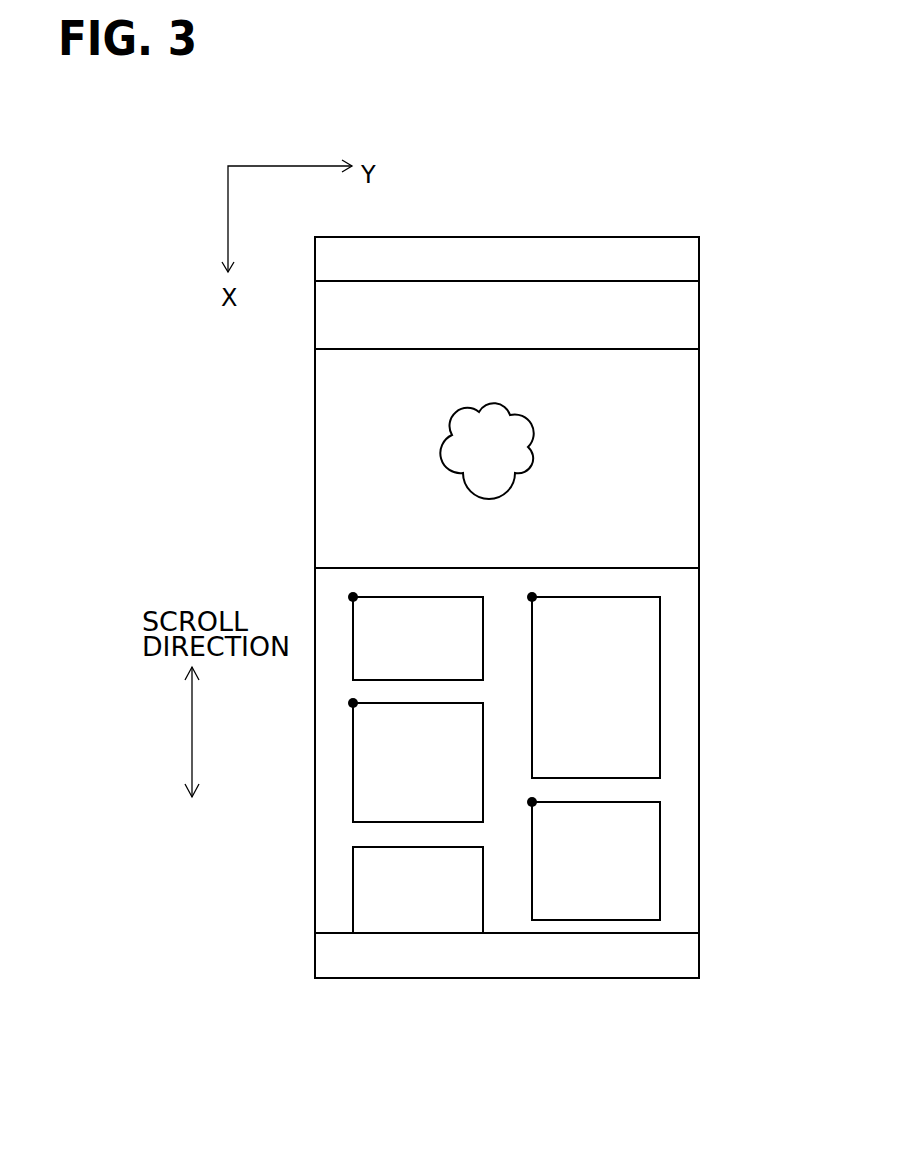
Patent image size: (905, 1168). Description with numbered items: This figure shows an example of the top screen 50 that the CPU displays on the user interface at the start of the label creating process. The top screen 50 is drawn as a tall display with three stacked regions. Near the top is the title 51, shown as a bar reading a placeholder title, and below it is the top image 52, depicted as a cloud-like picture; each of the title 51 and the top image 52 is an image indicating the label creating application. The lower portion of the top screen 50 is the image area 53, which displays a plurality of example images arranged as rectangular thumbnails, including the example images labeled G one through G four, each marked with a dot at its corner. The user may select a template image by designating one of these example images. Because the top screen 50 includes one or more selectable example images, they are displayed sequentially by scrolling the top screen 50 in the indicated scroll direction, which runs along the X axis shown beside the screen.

The top screen 50 is at (672, 224).
The title 51 is at (692, 300).
The top image 52 is at (687, 444).
The image area 53 is at (737, 570).